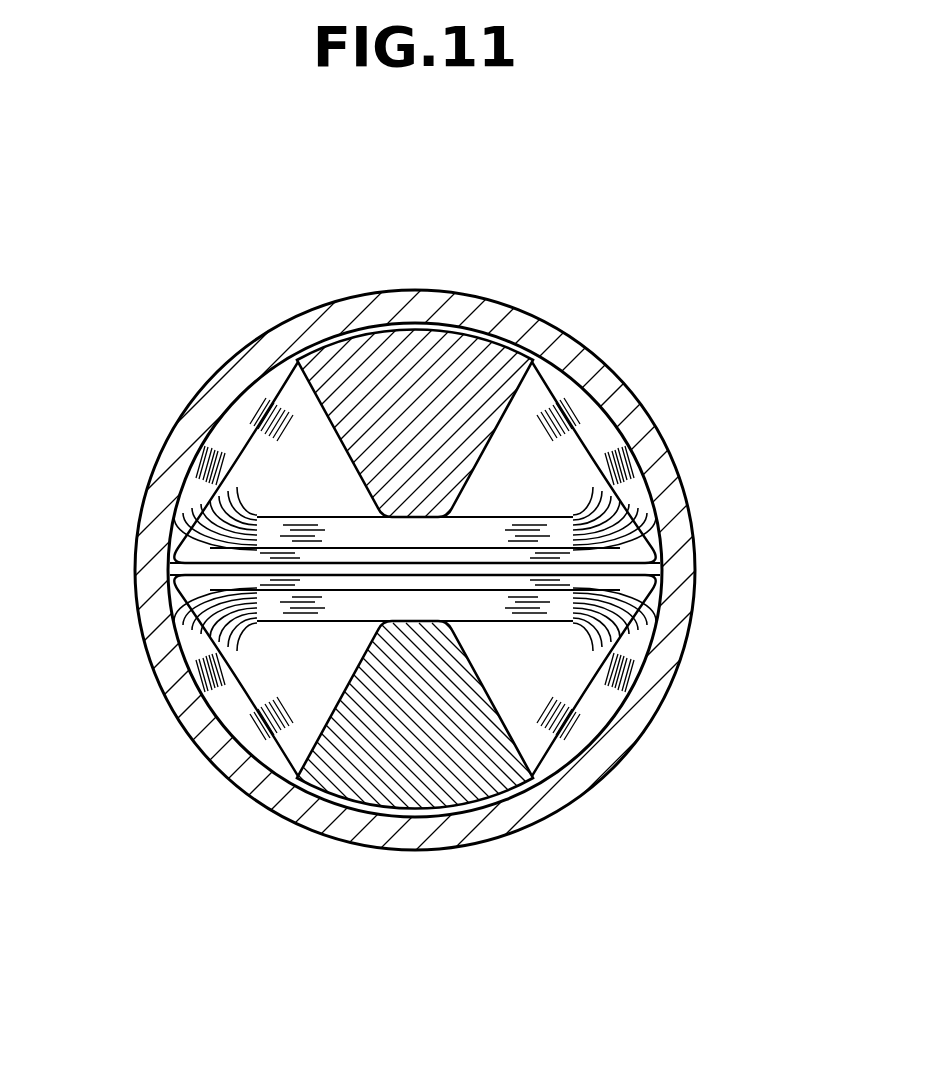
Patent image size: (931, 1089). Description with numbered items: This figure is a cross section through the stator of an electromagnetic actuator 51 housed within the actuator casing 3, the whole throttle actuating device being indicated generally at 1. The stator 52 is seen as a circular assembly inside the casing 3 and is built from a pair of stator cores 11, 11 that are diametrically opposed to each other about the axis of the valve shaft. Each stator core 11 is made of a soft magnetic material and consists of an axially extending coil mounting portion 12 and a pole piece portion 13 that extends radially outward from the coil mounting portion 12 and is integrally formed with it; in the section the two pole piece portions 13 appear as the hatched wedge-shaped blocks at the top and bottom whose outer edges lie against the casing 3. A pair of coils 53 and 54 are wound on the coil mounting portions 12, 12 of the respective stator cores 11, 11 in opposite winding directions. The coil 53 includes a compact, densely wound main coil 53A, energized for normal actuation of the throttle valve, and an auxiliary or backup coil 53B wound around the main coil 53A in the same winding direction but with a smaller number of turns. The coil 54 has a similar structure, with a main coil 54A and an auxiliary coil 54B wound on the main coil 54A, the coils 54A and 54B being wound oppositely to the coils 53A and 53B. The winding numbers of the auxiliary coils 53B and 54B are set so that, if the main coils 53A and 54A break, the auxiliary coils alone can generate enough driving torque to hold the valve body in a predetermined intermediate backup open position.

The electromagnetic actuator 1 is at (617, 374).
The actuator casing 3 is at (549, 343).
The stator core 11 is at (357, 330).
The coil mounting portion 12 is at (293, 456).
The pole piece portion 13 is at (474, 348).
The electromagnetic actuator 51 is at (247, 387).
The stator 52 is at (170, 625).
The coil 53 is at (662, 493).
The main coil 53A is at (640, 541).
The auxiliary coil 53B is at (612, 430).
The coil 54 is at (580, 708).
The main coil 54A is at (608, 717).
The auxiliary coil 54B is at (643, 638).